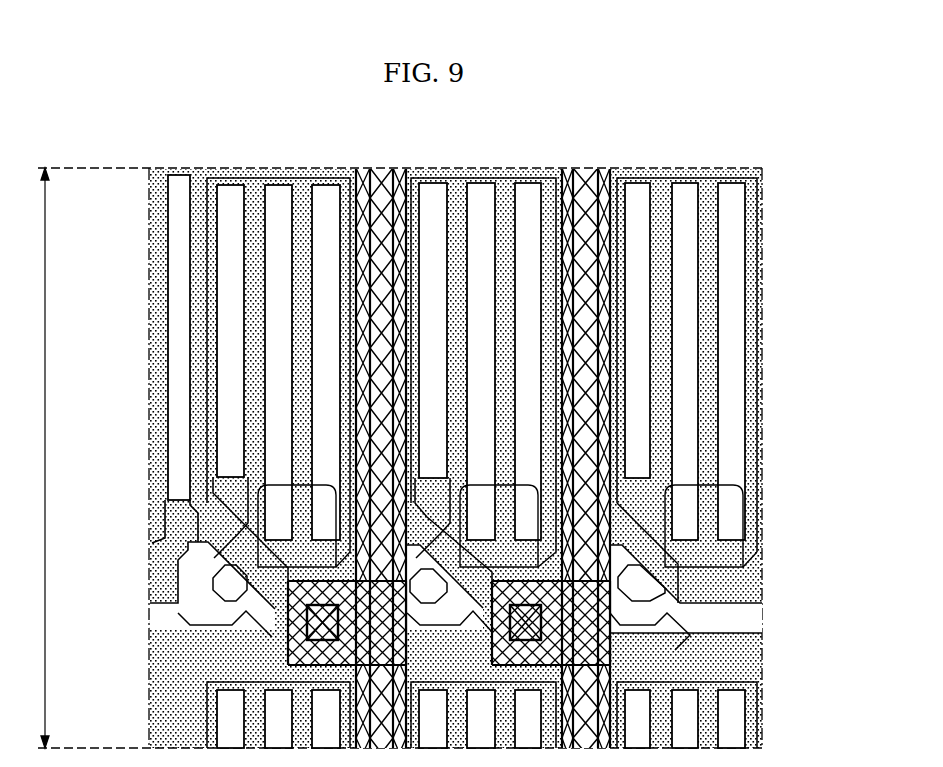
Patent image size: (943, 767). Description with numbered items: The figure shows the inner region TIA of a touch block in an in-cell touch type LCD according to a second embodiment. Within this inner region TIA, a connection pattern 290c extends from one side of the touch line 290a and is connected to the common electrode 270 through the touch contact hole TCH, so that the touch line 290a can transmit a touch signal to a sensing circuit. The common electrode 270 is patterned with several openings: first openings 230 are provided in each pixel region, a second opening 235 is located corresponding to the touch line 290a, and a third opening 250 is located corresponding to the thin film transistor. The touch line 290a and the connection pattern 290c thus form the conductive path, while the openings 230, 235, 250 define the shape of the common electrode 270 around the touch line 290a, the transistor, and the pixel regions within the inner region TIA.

The first opening 230 is at (686, 213).
The second opening 235 is at (383, 178).
The third opening 250 is at (171, 617).
The common electrode 270 is at (617, 170).
The touch line 290a is at (398, 168).
The connection pattern 290c is at (292, 660).
The touch contact hole TCH is at (300, 624).
The inner region TIA is at (383, 458).